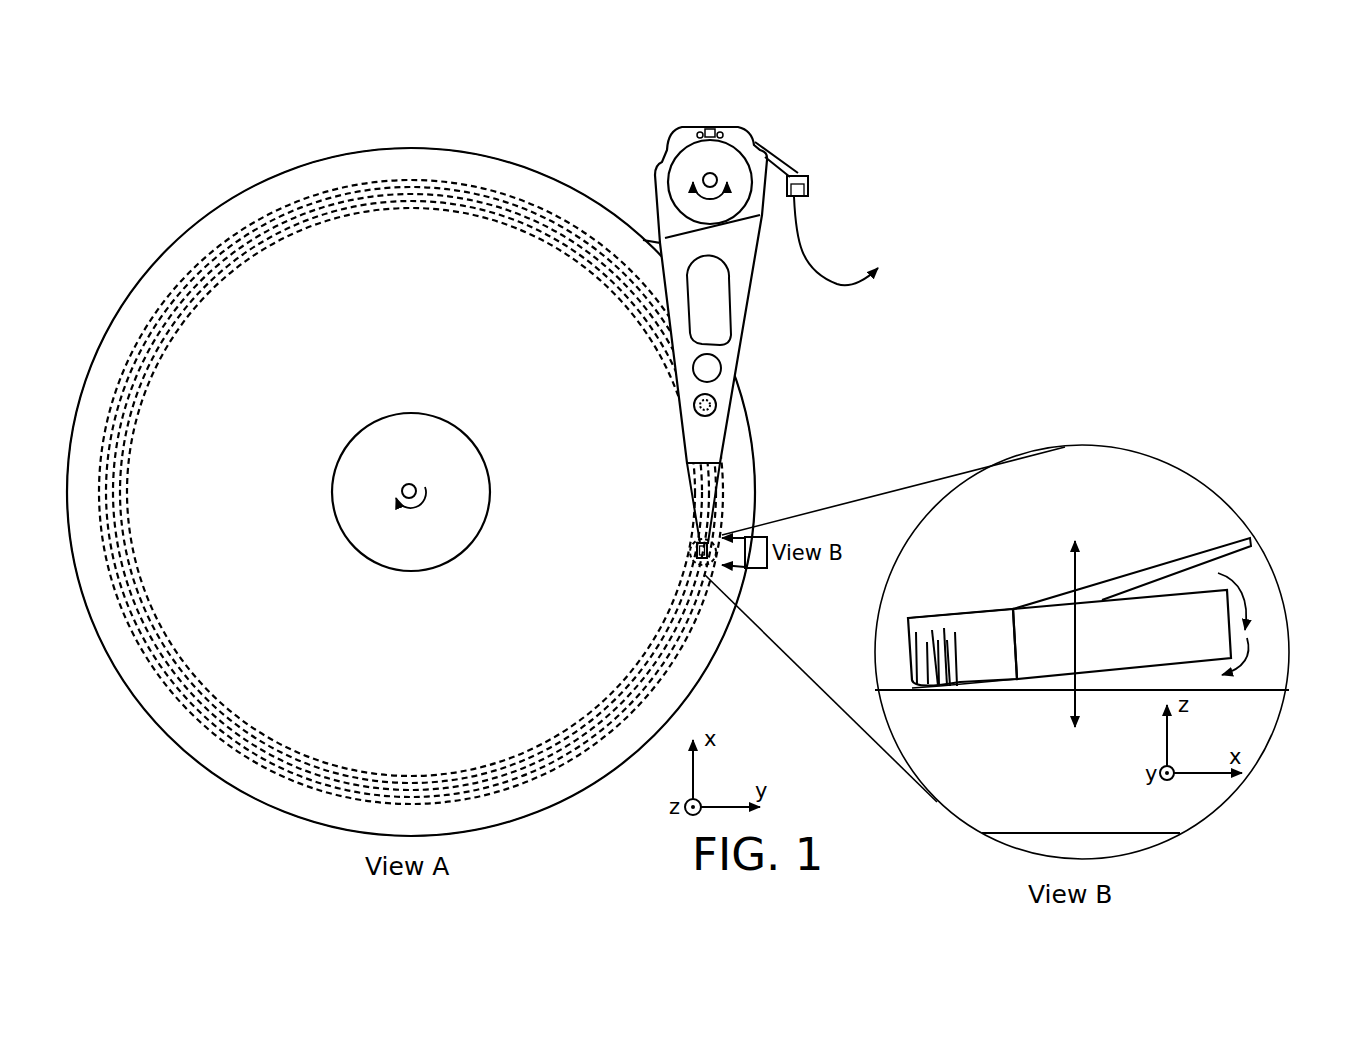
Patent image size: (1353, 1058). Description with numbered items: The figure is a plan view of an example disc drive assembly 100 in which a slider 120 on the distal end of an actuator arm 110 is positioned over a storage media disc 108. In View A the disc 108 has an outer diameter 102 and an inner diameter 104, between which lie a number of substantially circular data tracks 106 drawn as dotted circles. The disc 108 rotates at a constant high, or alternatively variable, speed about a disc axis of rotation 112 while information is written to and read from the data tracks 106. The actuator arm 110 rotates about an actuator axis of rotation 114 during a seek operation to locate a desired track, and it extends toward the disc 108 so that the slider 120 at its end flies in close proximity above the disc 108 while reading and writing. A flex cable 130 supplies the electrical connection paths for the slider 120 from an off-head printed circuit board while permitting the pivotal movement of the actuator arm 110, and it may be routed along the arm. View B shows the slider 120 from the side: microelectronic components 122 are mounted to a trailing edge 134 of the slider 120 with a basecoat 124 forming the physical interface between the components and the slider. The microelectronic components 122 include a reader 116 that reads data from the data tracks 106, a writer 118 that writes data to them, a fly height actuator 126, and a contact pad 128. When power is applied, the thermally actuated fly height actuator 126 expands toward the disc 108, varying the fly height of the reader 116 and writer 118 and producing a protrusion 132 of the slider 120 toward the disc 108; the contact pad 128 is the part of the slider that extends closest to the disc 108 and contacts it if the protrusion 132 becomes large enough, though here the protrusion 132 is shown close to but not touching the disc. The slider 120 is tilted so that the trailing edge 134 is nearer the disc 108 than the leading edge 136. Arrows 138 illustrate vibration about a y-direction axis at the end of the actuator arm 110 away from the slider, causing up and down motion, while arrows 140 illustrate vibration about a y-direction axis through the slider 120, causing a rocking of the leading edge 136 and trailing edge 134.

The disc drive assembly 100 is at (233, 128).
The outer diameter 102 is at (483, 150).
The inner diameter 104 is at (402, 412).
The data tracks 106 is at (283, 205).
The storage media disc 108 is at (227, 783).
The actuator arm 110 is at (665, 293).
The disc axis of rotation 112 is at (415, 497).
The actuator axis of rotation 114 is at (708, 178).
The reader 116 is at (952, 680).
The writer 118 is at (933, 687).
The slider 120 is at (688, 543).
The microelectronic components 122 is at (930, 628).
The basecoat 124 is at (1013, 669).
The fly height actuator 126 is at (933, 680).
The contact pad 128 is at (912, 660).
The flex cable 130 is at (837, 284).
The protrusion 132 is at (952, 690).
The trailing edge 134 is at (900, 667).
The leading edge 136 is at (1241, 633).
The arrows indicating vibration about an axis at the arm end 138 is at (1075, 540).
The arrows indicating vibration about an axis through the slider 140 is at (915, 604).